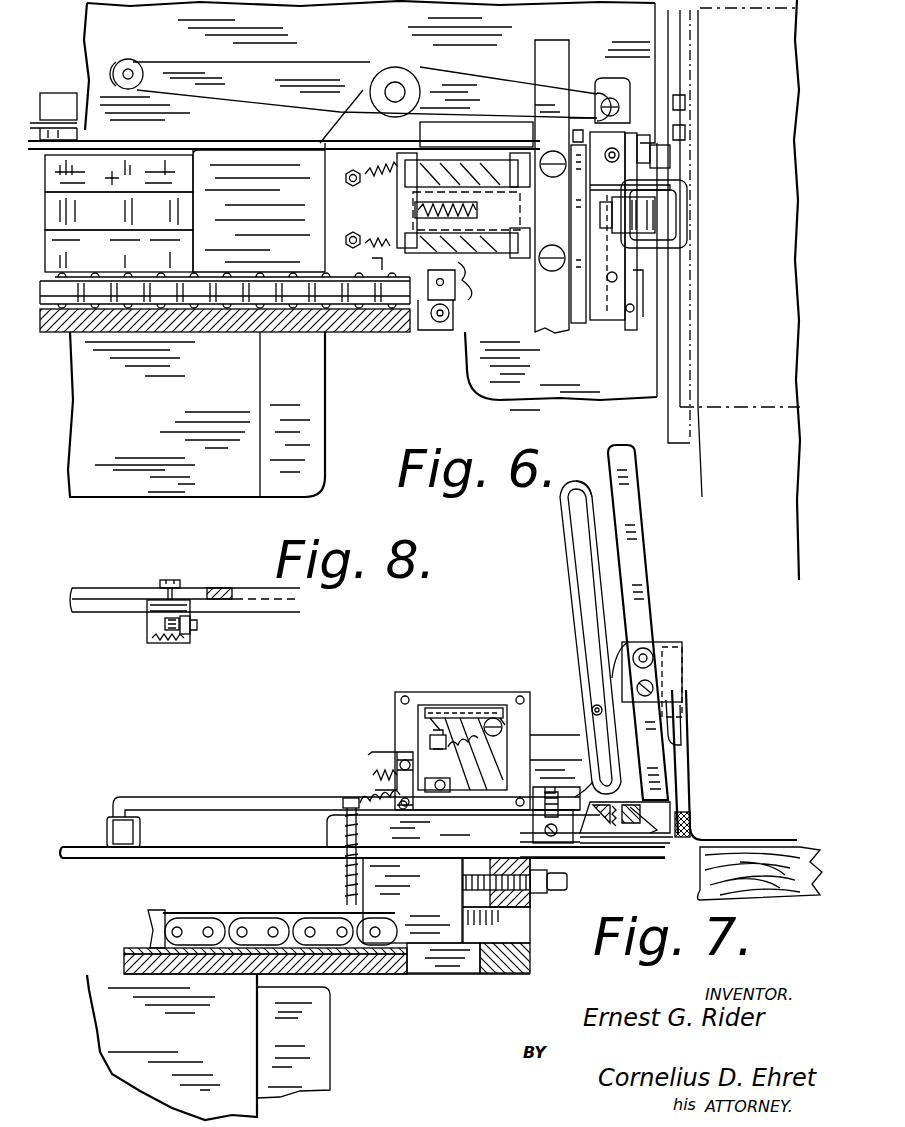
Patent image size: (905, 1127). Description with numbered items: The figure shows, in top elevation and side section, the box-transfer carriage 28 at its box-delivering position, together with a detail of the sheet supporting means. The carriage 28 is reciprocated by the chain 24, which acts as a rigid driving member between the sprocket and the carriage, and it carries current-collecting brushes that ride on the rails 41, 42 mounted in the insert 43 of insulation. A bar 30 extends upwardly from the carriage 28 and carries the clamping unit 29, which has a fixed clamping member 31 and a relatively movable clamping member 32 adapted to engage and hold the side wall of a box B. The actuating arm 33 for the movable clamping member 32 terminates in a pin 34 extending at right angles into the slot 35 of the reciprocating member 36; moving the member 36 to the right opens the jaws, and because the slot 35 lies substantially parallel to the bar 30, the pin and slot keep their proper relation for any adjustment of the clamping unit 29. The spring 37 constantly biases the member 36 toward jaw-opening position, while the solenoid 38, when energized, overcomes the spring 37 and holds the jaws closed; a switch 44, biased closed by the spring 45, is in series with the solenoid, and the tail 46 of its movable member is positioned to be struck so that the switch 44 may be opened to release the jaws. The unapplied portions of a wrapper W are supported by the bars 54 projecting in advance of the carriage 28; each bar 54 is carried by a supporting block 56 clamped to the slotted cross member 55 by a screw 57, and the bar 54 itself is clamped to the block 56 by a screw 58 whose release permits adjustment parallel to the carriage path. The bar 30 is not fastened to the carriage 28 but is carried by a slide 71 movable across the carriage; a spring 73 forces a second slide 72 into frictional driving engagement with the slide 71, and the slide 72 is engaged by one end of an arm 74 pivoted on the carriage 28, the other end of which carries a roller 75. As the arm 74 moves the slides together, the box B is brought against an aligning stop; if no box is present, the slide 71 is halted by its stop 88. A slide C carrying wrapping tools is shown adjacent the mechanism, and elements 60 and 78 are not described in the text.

In FIG. 6, the chain 24 is at (48, 140).
In FIG. 7, the chain 24 is at (178, 920).
In FIG. 6, the carriage 28 is at (272, 150).
In FIG. 7, the carriage 28 is at (328, 840).
In FIG. 7, the clamping unit 29 is at (655, 645).
In FIG. 6, the bar 30 is at (604, 210).
In FIG. 7, the bar 30 is at (637, 562).
In FIG. 7, the fixed clamping member 31 is at (683, 740).
In FIG. 6, the movable clamping member 32 is at (687, 200).
In FIG. 7, the movable clamping member 32 is at (680, 660).
In FIG. 7, the actuating arm 33 is at (612, 680).
In FIG. 7, the pin 34 is at (590, 702).
In FIG. 7, the slot 35 is at (578, 598).
In FIG. 7, the reciprocating member 36 is at (577, 626).
In FIG. 6, the spring 37 is at (420, 212).
In FIG. 7, the solenoid 38 is at (443, 722).
In FIG. 6, the rail 41 is at (93, 180).
In FIG. 6, the rail 42 is at (128, 243).
In FIG. 7, the rail 42 is at (136, 953).
In FIG. 7, the insert 43 is at (352, 972).
In FIG. 7, the switch 44 is at (392, 752).
In FIG. 7, the spring 45 is at (372, 766).
In FIG. 7, the tail 46 is at (372, 778).
In FIG. 8, the bar 54 is at (170, 645).
In FIG. 7, the bar 54 is at (495, 840).
In FIG. 6, the slotted cross member 55 is at (563, 62).
In FIG. 8, the slotted cross member 55 is at (210, 588).
In FIG. 7, the slotted cross member 55 is at (566, 768).
In FIG. 8, the supporting block 56 is at (152, 625).
In FIG. 7, the supporting block 56 is at (540, 836).
In FIG. 8, the screw 57 is at (160, 582).
In FIG. 8, the screw 58 is at (192, 632).
In FIG. 7, the screw 58 is at (550, 835).
In FIG. 6, the support plate 60 is at (510, 393).
In FIG. 7, the support plate 60 is at (193, 848).
In FIG. 6, the slide 71 is at (642, 145).
In FIG. 7, the slide 71 is at (635, 822).
In FIG. 6, the slide 72 is at (628, 100).
In FIG. 7, the slide 72 is at (653, 755).
In FIG. 7, the spring 73 is at (612, 820).
In FIG. 6, the arm 74 is at (470, 95).
In FIG. 7, the arm 74 is at (582, 773).
In FIG. 6, the roller 75 is at (127, 59).
In FIG. 6, the plate 78 is at (580, 312).
In FIG. 7, the plate 78 is at (548, 815).
In FIG. 6, the stop 88 is at (578, 130).
In FIG. 7, the box B is at (692, 786).
In FIG. 6, the slide C is at (320, 447).
In FIG. 7, the slide C is at (320, 1047).
In FIG. 6, the wrapper W is at (722, 470).